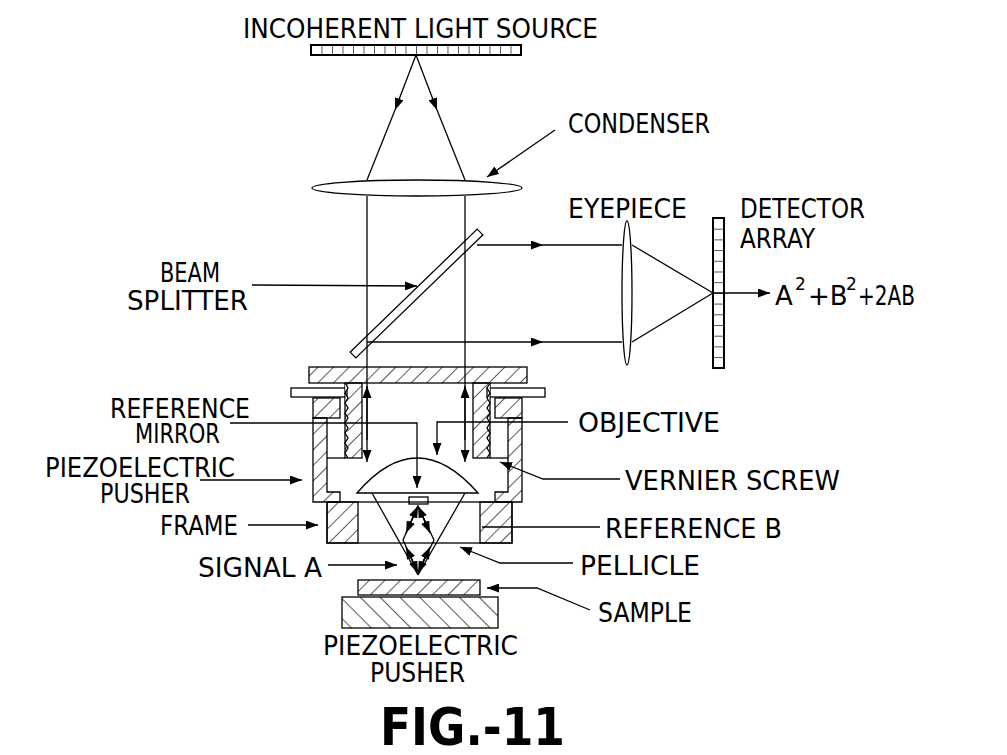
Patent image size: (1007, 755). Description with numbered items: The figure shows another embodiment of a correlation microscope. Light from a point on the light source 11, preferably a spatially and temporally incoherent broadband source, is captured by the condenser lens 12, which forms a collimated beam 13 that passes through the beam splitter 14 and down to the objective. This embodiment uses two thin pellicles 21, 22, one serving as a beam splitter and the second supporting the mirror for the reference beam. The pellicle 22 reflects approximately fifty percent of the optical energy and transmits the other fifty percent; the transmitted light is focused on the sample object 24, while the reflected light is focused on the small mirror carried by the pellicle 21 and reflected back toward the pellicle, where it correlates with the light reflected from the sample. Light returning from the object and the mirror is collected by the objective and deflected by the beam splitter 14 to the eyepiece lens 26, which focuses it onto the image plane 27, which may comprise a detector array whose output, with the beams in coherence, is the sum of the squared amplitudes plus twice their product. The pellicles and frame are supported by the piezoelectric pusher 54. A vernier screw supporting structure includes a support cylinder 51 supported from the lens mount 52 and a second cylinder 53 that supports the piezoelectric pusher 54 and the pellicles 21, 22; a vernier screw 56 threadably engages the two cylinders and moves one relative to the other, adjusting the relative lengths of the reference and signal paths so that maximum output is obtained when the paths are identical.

The light source 11 is at (473, 57).
The condenser lens 12 is at (353, 180).
The collimated beam 13 is at (367, 235).
The beam splitter 14 is at (385, 320).
The eyepiece lens 26 is at (630, 245).
The image plane 27 is at (725, 325).
The support cylinder 51 is at (374, 405).
The lens mount 52 is at (323, 367).
The second cylinder 53 is at (313, 404).
The piezoelectric pusher 54 is at (313, 458).
The vernier screw 56 is at (295, 388).
The pellicle 21 is at (436, 506).
The pellicle 22 is at (458, 546).
The sample object 24 is at (360, 588).